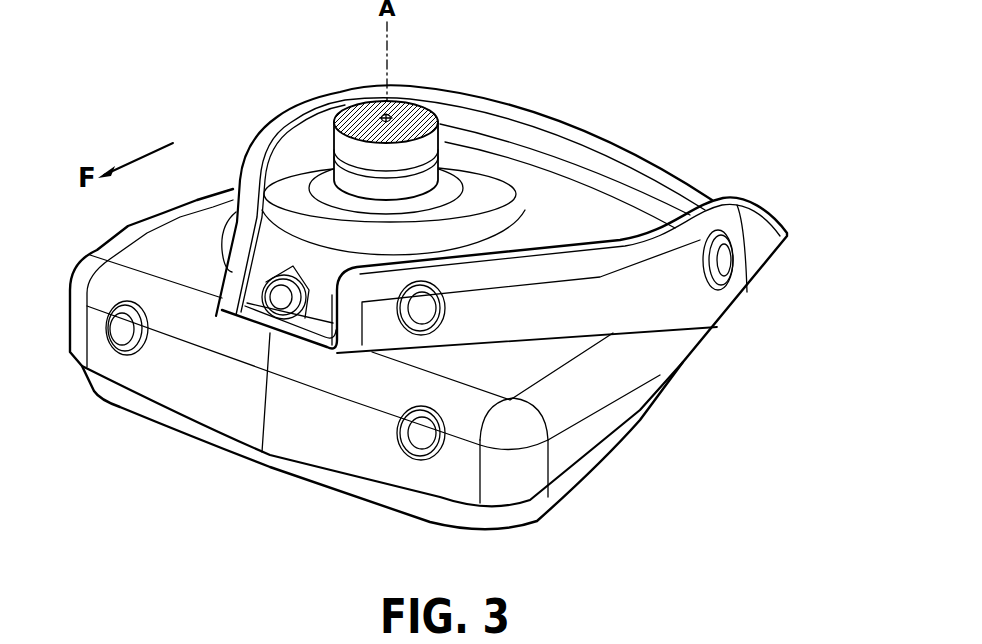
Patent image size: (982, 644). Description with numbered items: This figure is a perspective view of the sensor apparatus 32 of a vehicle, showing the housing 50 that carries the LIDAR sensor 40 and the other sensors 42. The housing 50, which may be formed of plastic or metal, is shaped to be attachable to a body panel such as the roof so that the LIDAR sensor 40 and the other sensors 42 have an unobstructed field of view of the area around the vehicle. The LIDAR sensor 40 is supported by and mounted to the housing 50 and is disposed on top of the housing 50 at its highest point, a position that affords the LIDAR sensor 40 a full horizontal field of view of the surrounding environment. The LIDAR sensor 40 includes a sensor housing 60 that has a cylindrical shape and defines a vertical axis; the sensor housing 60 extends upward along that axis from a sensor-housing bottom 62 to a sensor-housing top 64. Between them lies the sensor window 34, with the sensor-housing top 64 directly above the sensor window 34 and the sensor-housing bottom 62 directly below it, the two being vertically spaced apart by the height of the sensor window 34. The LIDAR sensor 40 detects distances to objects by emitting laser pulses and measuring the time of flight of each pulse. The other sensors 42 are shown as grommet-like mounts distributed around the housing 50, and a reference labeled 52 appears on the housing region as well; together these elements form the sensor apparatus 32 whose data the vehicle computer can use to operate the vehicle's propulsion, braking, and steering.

The sensor apparatus 32 is at (649, 105).
The sensor window 34 is at (432, 109).
The LIDAR sensor 40 is at (421, 92).
The other sensors 42 is at (402, 325).
The housing 50 is at (680, 365).
The upper body 52 is at (690, 308).
The sensor housing 60 is at (447, 128).
The sensor-housing bottom 62 is at (453, 195).
The sensor-housing top 64 is at (441, 143).